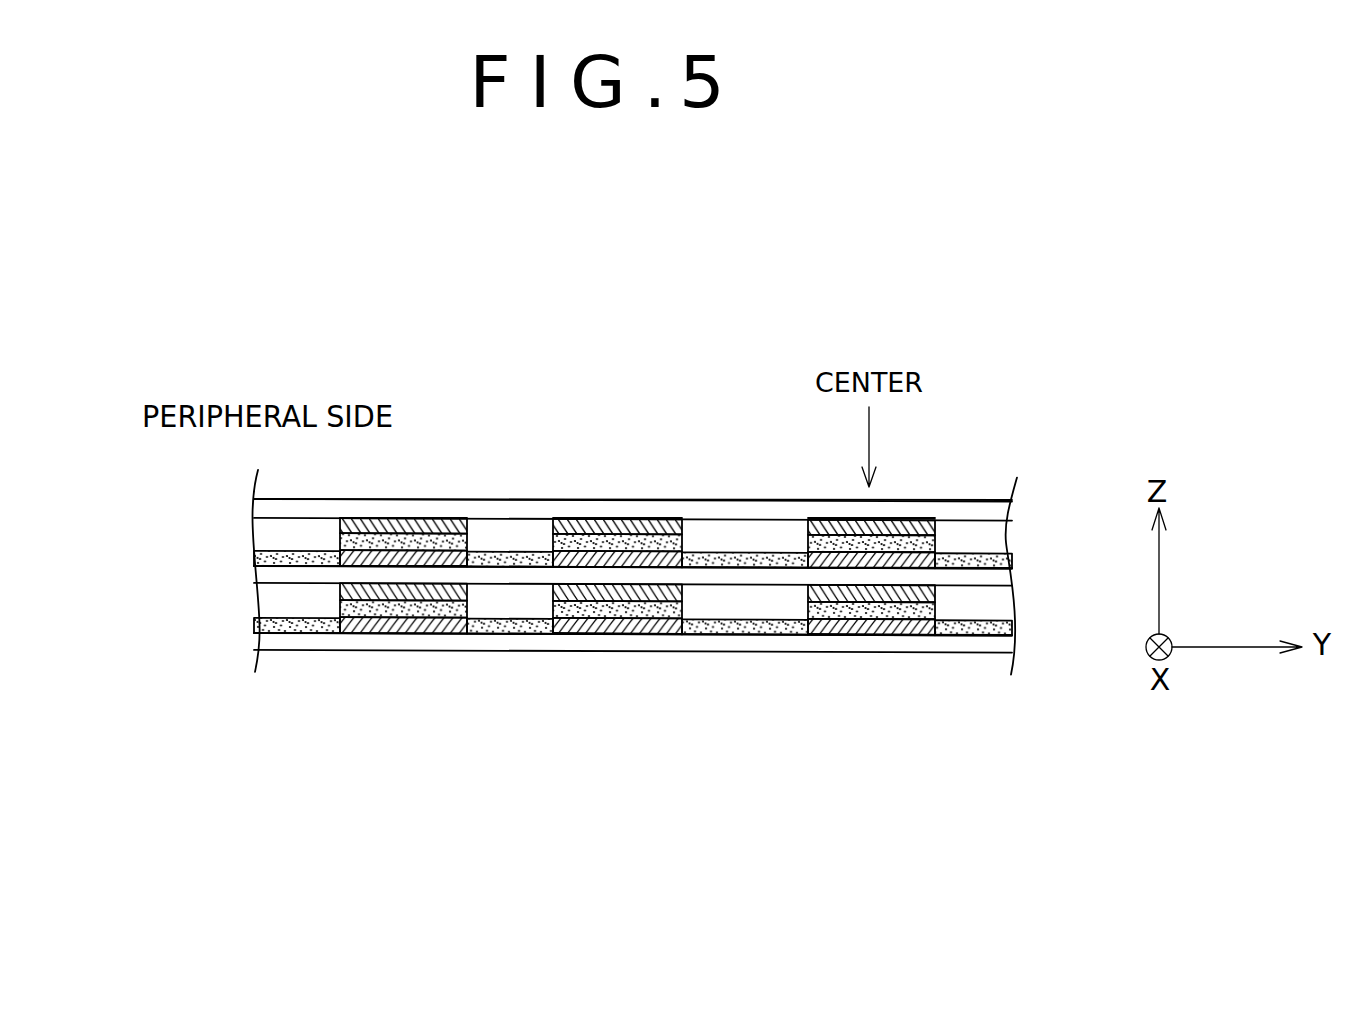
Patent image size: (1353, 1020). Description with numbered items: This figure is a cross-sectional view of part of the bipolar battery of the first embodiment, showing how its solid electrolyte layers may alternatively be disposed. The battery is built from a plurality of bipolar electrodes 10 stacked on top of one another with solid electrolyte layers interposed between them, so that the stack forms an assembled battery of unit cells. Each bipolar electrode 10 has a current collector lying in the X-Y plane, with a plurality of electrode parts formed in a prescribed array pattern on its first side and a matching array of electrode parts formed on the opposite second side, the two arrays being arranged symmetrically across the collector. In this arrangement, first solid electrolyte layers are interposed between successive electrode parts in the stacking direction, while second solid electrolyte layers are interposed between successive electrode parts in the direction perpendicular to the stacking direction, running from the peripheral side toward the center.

The bipolar electrode 10 is at (112, 505).